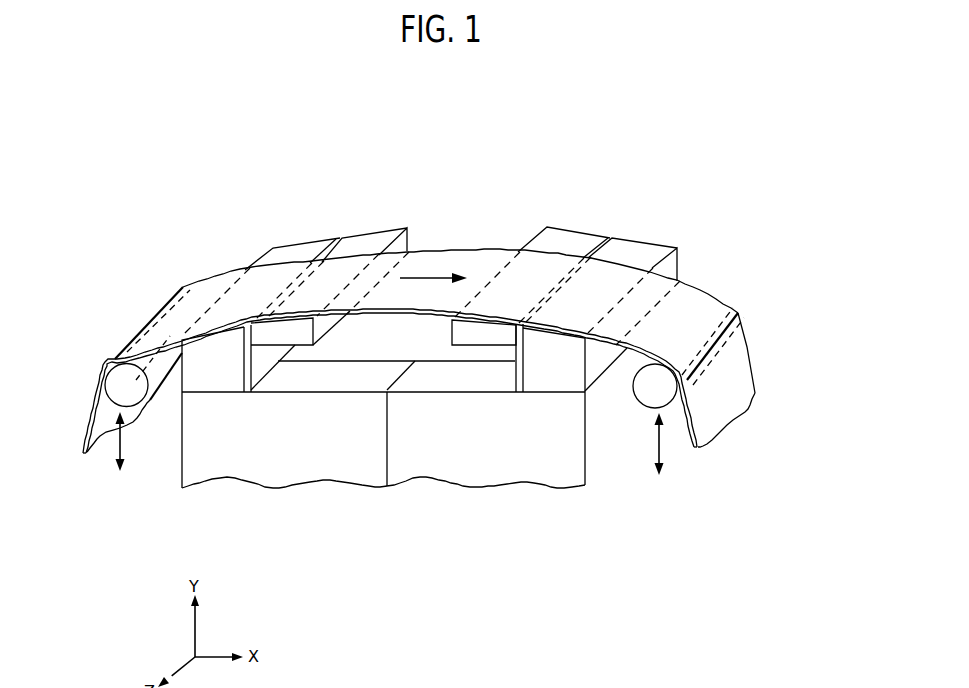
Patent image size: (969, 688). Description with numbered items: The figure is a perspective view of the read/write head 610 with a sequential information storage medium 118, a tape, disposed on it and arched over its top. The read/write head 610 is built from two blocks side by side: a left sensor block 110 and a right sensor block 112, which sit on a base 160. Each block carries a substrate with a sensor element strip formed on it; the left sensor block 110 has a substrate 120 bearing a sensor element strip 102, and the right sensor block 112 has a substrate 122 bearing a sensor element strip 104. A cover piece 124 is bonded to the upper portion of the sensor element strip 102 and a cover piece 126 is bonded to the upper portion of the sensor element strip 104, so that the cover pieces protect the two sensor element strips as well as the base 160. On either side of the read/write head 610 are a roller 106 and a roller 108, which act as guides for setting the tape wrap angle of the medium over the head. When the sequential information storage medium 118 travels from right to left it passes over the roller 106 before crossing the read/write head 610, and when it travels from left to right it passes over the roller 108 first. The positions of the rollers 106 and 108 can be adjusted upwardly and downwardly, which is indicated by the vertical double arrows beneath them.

The read/write head 610 is at (528, 139).
The sequential information storage medium 118 is at (713, 281).
The substrate 120 is at (277, 250).
The sensor element strip 102 is at (340, 237).
The cover piece 124 is at (405, 228).
The cover piece 126 is at (550, 233).
The sensor element strip 104 is at (610, 238).
The substrate 122 is at (667, 252).
The roller 106 is at (125, 372).
The roller 108 is at (665, 388).
The base 160 is at (623, 430).
The left sensor block 110 is at (293, 467).
The right sensor block 112 is at (475, 465).